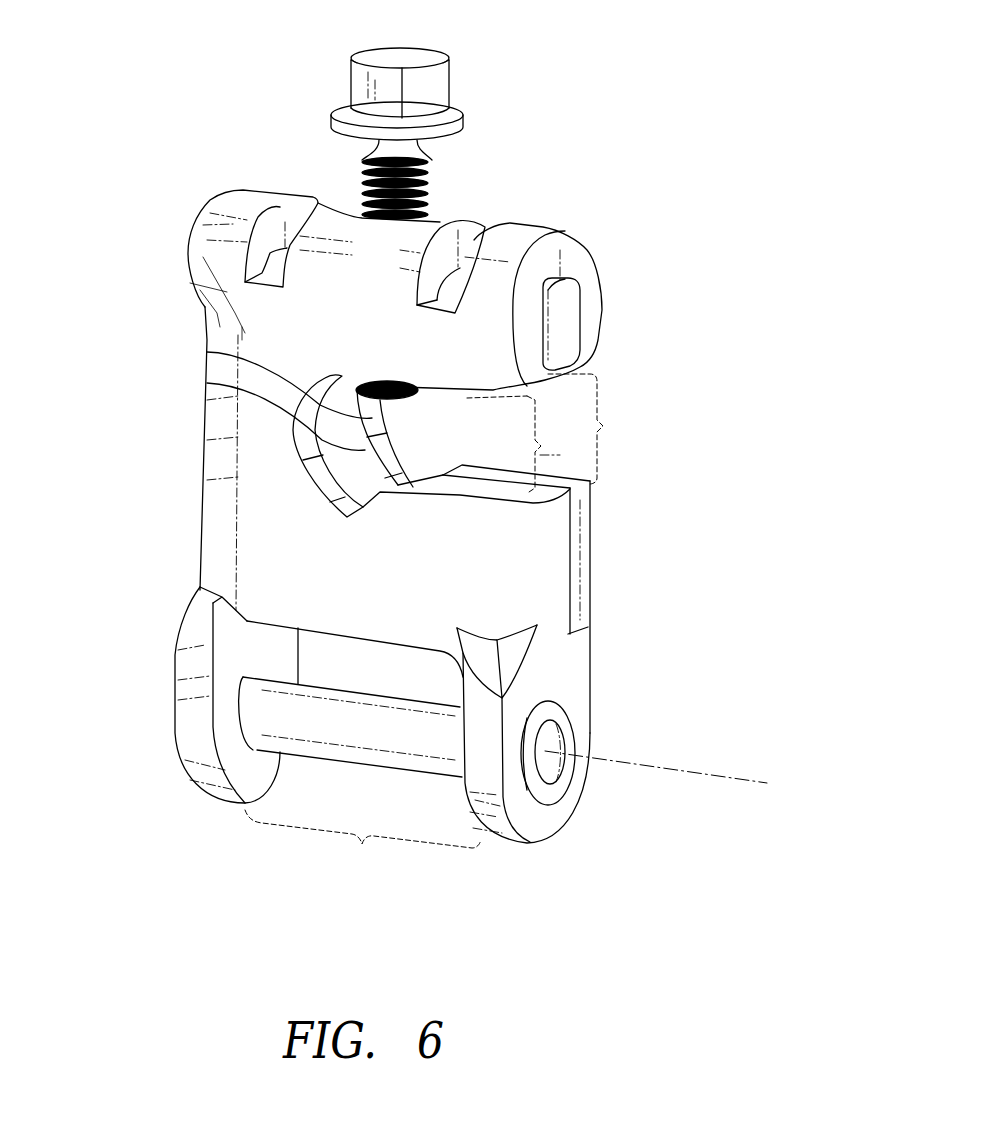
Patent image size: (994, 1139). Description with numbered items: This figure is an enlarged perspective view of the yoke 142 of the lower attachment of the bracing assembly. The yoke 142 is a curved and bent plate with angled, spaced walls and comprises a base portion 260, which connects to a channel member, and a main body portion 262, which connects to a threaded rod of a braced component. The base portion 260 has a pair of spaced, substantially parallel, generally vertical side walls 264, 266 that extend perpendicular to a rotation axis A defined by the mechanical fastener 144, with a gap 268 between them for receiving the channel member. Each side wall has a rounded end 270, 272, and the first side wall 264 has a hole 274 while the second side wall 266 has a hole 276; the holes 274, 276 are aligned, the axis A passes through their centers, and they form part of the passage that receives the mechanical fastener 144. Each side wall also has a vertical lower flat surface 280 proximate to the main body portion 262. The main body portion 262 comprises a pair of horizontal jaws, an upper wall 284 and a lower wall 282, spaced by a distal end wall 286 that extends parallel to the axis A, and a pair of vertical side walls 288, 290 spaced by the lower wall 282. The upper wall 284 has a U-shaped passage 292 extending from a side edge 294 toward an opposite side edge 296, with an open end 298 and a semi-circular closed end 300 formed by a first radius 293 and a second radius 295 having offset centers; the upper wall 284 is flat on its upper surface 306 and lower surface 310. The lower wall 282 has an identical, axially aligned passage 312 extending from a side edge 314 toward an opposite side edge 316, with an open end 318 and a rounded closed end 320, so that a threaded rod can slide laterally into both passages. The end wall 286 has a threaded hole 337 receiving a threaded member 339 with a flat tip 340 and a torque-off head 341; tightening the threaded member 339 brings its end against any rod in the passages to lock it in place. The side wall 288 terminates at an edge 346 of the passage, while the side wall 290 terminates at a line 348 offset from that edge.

The yoke 142 is at (707, 195).
The mechanical fastener 144 is at (450, 745).
The base portion 260 is at (172, 952).
The main body portion 262 is at (578, 122).
The first side wall 264 is at (180, 770).
The second side wall 266 is at (538, 820).
The gap 268 is at (363, 842).
The rounded end 270 is at (208, 783).
The rounded end 272 is at (490, 823).
The hole 274 is at (257, 750).
The hole 276 is at (577, 782).
The lower flat surface 280 is at (573, 634).
The lower wall 282 is at (252, 513).
The upper wall 284 is at (586, 564).
The end wall 286 is at (248, 205).
The side wall 288 is at (553, 541).
The side wall 290 is at (211, 451).
The passage 292 is at (596, 429).
The first radius 293 is at (207, 352).
The side edge 294 is at (587, 329).
The second radius 295 is at (207, 383).
The opposite side edge 296 is at (222, 473).
The open end 298 is at (520, 463).
The rounded closed end 300 is at (440, 453).
The upper surface 306 is at (592, 592).
The lower surface 310 is at (550, 325).
The passage 312 is at (554, 444).
The side edge 314 is at (523, 332).
The opposite side edge 316 is at (233, 395).
The open end 318 is at (512, 422).
The rounded closed end 320 is at (372, 491).
The threaded hole 337 is at (360, 217).
The threaded member 339 is at (367, 82).
The flat tip 340 is at (376, 392).
The torque-off head 341 is at (437, 83).
The edge 346 is at (590, 579).
The line 348 is at (224, 322).
The rotation axis A is at (720, 773).